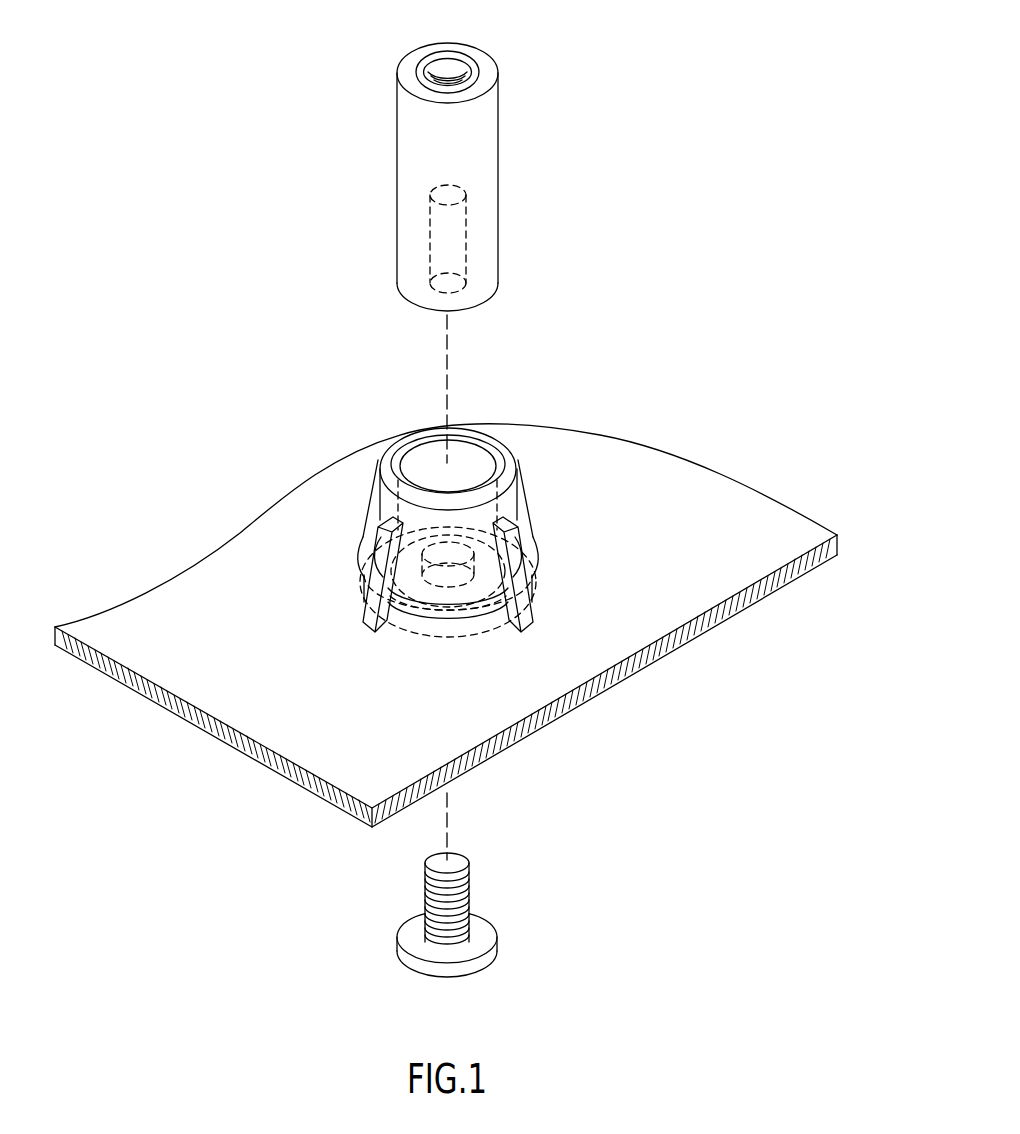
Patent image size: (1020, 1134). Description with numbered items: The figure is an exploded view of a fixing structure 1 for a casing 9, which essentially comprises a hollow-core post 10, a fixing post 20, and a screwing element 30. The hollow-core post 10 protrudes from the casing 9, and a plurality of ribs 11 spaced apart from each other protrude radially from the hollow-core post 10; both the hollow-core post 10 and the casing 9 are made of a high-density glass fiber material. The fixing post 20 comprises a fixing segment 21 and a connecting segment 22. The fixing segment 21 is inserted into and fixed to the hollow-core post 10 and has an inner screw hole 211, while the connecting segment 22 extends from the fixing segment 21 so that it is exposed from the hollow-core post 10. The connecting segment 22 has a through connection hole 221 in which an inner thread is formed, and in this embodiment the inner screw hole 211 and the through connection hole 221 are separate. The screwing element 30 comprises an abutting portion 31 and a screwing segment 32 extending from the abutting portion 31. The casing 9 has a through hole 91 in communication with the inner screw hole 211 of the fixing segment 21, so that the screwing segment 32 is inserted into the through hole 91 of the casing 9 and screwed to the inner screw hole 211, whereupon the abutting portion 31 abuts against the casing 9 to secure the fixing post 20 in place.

The fixing structure 1 is at (440, 18).
The casing 9 is at (263, 533).
The through hole 91 is at (455, 622).
The hollow-core post 10 is at (455, 512).
The ribs 11 is at (382, 548).
The fixing post 20 is at (488, 175).
The fixing segment 21 is at (452, 257).
The inner screw hole 211 is at (452, 290).
The connecting segment 22 is at (449, 98).
The through connection hole 221 is at (453, 72).
The screwing element 30 is at (459, 918).
The abutting portion 31 is at (412, 962).
The screwing segment 32 is at (425, 893).